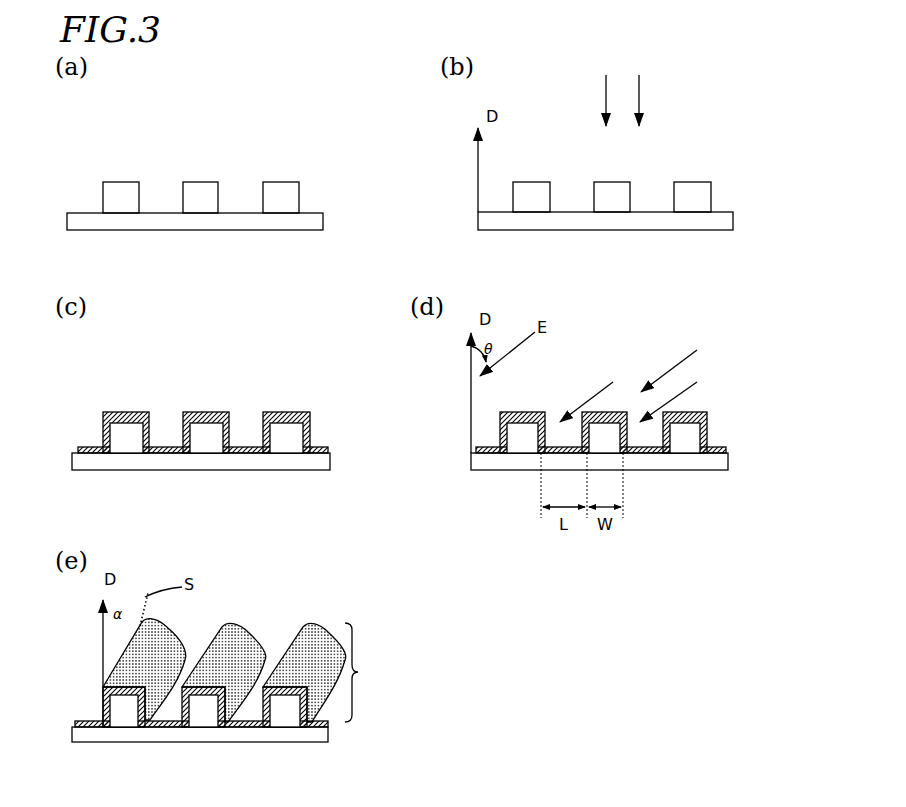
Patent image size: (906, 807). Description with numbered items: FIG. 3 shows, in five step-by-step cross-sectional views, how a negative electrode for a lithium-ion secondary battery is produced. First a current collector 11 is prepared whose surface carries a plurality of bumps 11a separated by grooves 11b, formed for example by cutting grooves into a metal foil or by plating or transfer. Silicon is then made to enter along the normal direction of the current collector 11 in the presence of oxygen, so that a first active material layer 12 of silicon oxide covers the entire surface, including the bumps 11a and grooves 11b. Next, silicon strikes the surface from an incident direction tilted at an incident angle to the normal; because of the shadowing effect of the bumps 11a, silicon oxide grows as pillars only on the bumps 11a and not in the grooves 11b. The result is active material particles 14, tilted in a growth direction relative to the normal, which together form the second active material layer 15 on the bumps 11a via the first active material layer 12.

The current collector 11 is at (376, 180).
The bumps 11a is at (295, 193).
The grooves 11b is at (239, 192).
The first active material layer 12 is at (290, 412).
The active material particles 14 is at (318, 632).
The second active material layer 15 is at (370, 672).